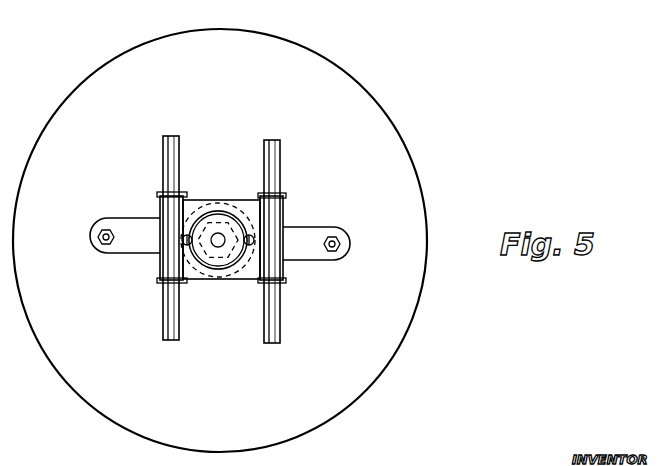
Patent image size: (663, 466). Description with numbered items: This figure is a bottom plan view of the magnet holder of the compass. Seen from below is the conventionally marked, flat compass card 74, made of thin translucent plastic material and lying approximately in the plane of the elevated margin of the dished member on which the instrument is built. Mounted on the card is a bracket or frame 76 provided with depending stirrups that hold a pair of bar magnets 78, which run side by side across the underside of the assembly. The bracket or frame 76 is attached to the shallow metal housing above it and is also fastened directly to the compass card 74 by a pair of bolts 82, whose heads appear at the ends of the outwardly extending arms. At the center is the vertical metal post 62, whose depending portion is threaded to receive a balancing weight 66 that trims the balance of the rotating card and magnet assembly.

The compass card 74 is at (333, 70).
The bar magnets 78 is at (181, 144).
The bracket or frame 76 is at (183, 196).
The vertical metal post 62 is at (217, 247).
The balancing weight 66 is at (215, 247).
The bolts 82 is at (106, 229).